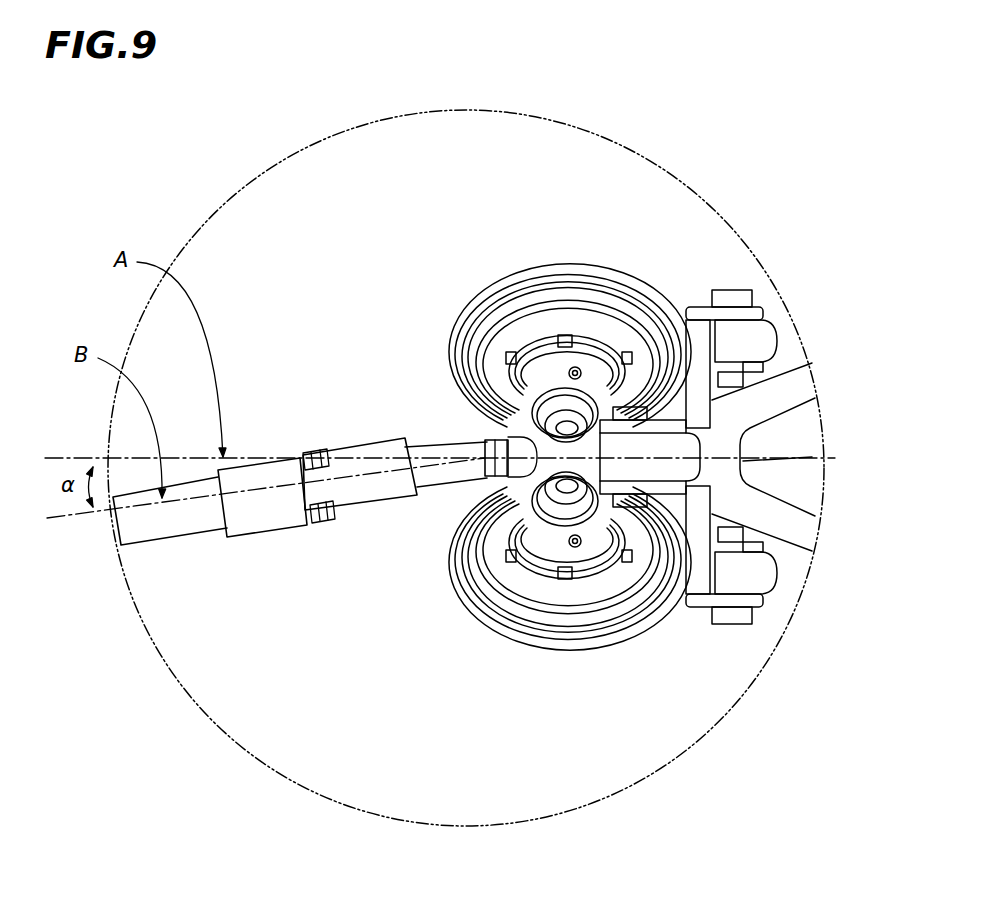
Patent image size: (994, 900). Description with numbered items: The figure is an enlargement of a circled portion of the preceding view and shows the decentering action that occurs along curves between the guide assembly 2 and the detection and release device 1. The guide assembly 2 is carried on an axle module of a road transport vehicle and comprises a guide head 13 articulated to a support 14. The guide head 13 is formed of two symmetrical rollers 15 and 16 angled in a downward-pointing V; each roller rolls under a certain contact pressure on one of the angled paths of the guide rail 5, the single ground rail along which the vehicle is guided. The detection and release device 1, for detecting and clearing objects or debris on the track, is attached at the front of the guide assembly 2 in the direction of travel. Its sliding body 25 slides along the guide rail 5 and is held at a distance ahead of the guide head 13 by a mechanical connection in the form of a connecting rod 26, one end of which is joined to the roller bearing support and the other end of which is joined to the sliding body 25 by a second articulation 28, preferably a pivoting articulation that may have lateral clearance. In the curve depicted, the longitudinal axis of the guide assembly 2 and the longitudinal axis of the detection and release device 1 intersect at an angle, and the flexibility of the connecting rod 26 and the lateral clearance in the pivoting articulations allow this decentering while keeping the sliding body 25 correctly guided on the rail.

The detection and release device 1 is at (308, 603).
The guide assembly 2 is at (585, 775).
The guide rail 5 is at (155, 542).
The guide head 13 is at (738, 250).
The support 14 is at (713, 338).
The roller 15 is at (618, 258).
The roller 16 is at (632, 648).
The sliding body 25 is at (372, 528).
The connecting rod 26 is at (437, 498).
The second articulation 28 is at (300, 522).